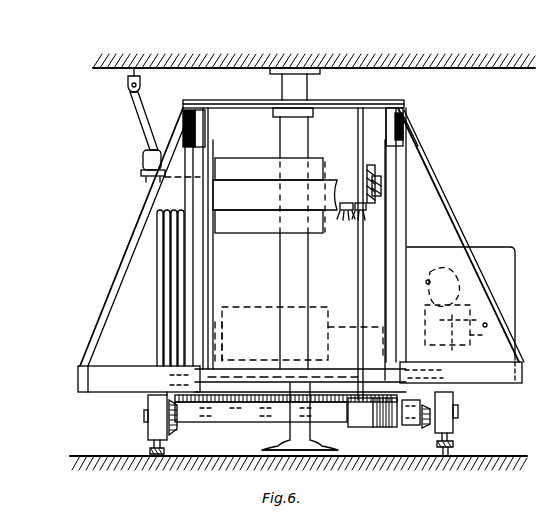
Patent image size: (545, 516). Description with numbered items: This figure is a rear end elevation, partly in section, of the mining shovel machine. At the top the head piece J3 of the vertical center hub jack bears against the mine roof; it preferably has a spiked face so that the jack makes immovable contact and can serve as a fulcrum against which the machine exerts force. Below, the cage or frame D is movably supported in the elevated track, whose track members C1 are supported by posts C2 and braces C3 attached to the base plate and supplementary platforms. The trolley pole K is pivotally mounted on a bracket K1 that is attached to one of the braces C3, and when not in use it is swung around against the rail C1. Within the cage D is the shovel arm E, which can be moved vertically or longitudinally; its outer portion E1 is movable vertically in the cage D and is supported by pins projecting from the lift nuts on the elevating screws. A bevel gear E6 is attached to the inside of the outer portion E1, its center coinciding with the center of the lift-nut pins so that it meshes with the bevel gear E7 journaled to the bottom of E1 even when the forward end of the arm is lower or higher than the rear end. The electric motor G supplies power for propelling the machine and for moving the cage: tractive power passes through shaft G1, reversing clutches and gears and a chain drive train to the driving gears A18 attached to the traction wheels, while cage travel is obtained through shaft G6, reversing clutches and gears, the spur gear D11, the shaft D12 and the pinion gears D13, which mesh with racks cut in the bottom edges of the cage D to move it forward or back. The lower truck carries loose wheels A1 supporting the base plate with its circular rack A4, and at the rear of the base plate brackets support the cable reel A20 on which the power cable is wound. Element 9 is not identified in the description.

The head piece J3 is at (271, 70).
The trolley pole K is at (135, 112).
The bracket K1 is at (150, 181).
The cage D is at (243, 112).
The track members C1 is at (400, 118).
The posts C2 is at (398, 136).
The braces C3 is at (147, 215).
The shovel arm E is at (224, 188).
The weight block 9 is at (259, 168).
The outer portion E1 is at (379, 161).
The bevel gear E7 is at (350, 216).
The bevel gear E6 is at (366, 213).
The electric motor G is at (462, 302).
The shaft G1 is at (430, 282).
The shaft G6 is at (487, 322).
The pinion gears D13 is at (213, 369).
The shaft D12 is at (228, 375).
The spur gear D11 is at (447, 376).
The driving gears A18 is at (172, 437).
The circular rack A4 is at (233, 404).
The cable reel A20 is at (356, 426).
The loose wheels A1 is at (453, 425).